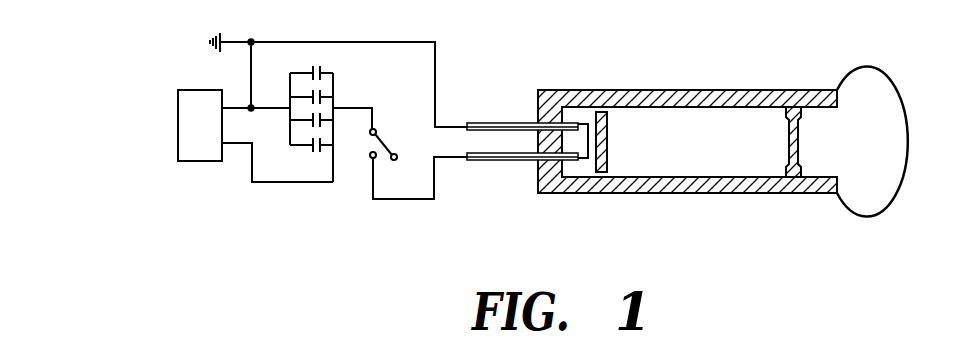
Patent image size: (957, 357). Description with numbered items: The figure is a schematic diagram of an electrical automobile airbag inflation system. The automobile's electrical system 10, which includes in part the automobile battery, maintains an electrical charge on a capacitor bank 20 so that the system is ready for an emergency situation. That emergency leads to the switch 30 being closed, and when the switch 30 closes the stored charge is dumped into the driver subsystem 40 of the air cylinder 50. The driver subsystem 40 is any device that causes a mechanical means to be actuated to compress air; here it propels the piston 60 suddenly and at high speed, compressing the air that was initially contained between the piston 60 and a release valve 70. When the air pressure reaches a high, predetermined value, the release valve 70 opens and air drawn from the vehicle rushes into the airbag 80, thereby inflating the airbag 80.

The electrical system 10 is at (197, 90).
The capacitor bank 20 is at (321, 72).
The switch 30 is at (372, 143).
The driver subsystem 40 is at (583, 126).
The air cylinder 50 is at (716, 90).
The piston 60 is at (607, 152).
The release valve 70 is at (786, 147).
The airbag 80 is at (884, 77).